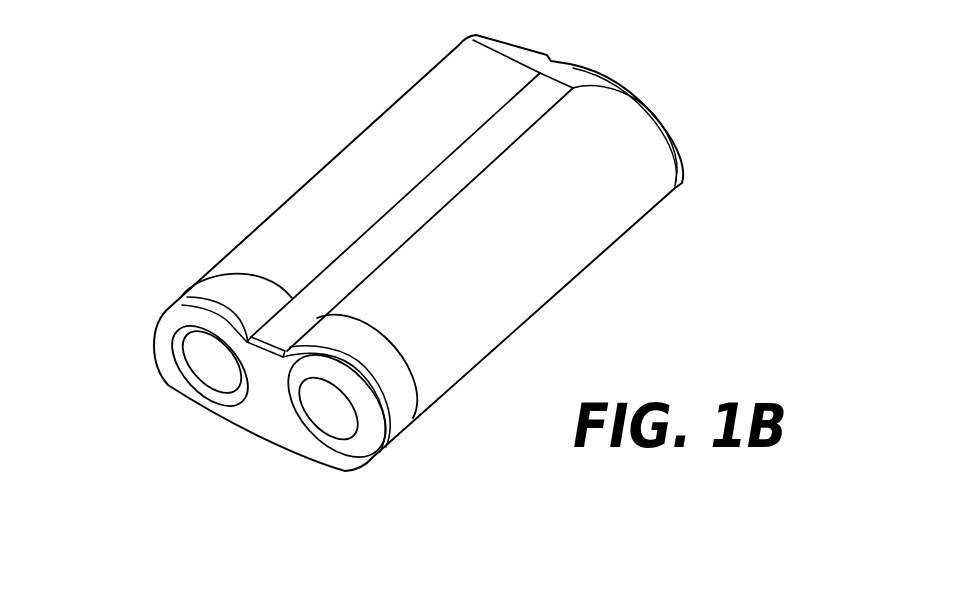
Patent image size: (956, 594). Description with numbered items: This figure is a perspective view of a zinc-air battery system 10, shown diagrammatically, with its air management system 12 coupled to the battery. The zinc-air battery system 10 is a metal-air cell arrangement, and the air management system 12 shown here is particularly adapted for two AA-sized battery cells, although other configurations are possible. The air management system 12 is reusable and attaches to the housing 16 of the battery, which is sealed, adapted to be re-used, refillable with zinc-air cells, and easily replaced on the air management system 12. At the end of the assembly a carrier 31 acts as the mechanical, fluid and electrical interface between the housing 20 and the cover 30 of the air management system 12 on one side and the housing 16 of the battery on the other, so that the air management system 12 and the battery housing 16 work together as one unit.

The zinc-air battery system 10 is at (292, 130).
The air management system 12 is at (128, 322).
The housing 16 is at (544, 279).
The housing 20 is at (192, 283).
The cover 30 is at (261, 441).
The carrier 31 is at (407, 433).